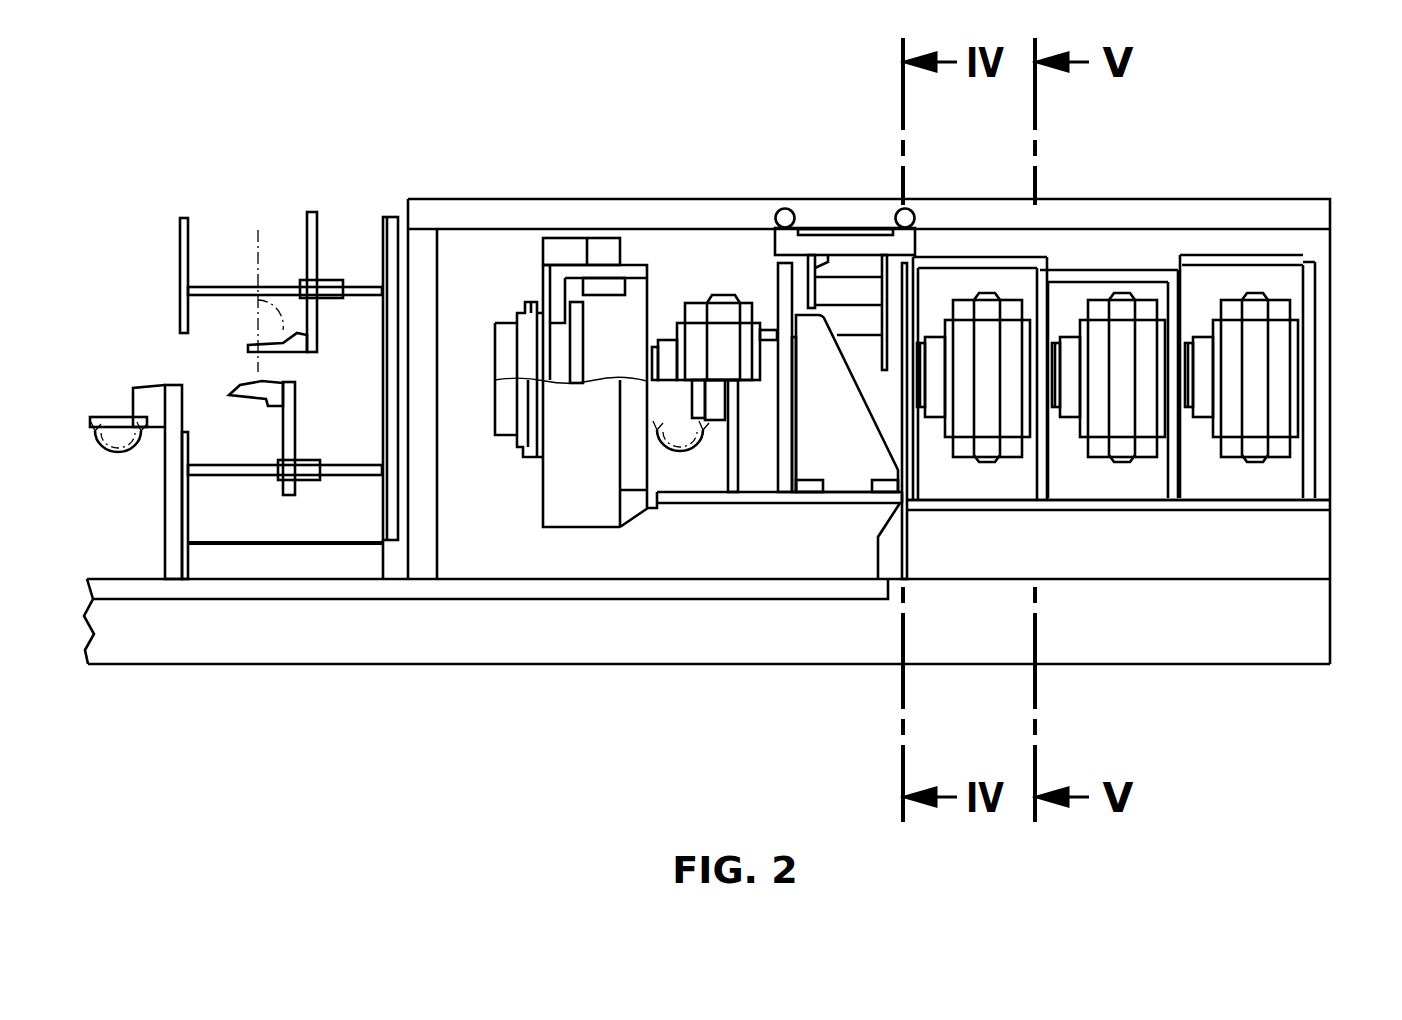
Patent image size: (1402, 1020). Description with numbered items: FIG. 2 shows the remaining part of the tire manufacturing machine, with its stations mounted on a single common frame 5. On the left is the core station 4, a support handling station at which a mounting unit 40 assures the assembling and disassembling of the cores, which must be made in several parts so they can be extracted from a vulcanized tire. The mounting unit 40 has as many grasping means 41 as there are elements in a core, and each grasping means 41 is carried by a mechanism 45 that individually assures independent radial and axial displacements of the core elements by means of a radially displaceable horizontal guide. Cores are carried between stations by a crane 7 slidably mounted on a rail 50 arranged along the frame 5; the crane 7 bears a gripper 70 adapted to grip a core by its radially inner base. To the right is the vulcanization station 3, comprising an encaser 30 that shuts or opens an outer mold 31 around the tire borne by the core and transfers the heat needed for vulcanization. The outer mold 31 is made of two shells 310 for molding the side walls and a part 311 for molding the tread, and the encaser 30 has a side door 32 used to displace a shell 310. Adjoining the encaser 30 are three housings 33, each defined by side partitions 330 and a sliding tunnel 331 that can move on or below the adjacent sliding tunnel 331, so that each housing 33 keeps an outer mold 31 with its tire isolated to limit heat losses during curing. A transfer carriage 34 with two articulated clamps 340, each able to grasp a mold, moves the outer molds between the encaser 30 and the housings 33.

The vulcanization station 3 is at (772, 134).
The core station 4 is at (205, 163).
The frame 5 is at (628, 640).
The crane 7 is at (175, 572).
The encaser 30 is at (570, 562).
The outer mold 31 is at (702, 300).
The side door 32 is at (783, 482).
The adjoining housing 33 is at (948, 283).
The transfer carriage 34 is at (855, 243).
The mounting unit 40 is at (306, 196).
The grasping means 41 is at (297, 333).
The mechanism 45 is at (285, 498).
The rail 50 is at (385, 590).
The gripper 70 is at (160, 393).
The shell 310 is at (578, 307).
The part for molding the tread 311 is at (598, 283).
The side partition 330 is at (908, 478).
The sliding tunnel 331 is at (978, 265).
The articulated clamp 340 is at (825, 260).